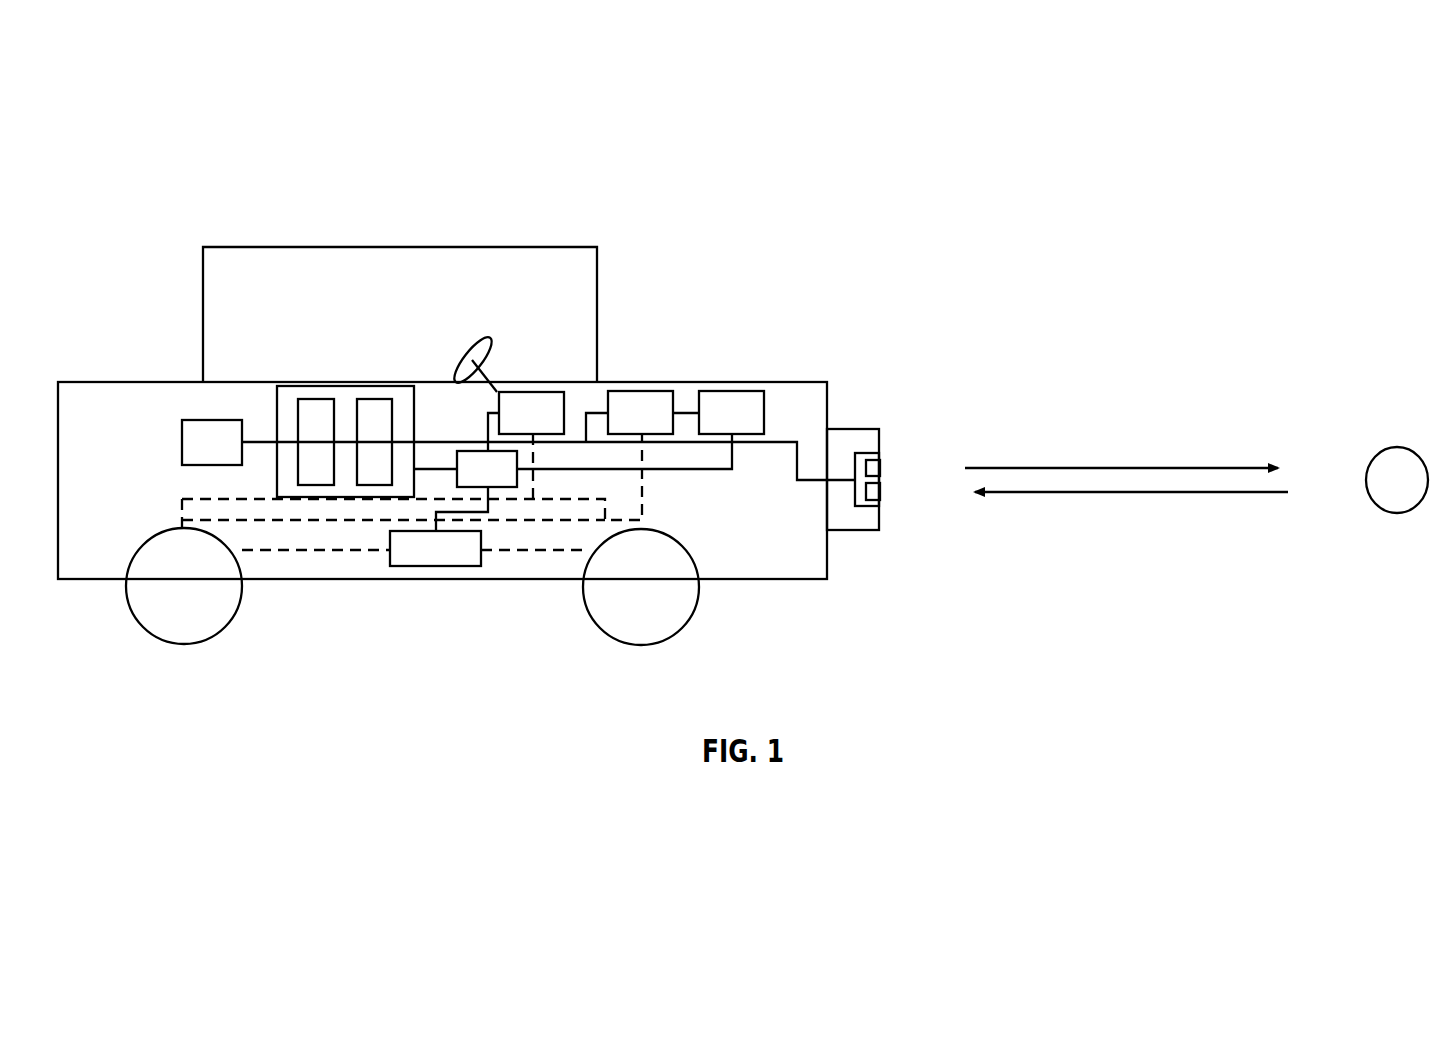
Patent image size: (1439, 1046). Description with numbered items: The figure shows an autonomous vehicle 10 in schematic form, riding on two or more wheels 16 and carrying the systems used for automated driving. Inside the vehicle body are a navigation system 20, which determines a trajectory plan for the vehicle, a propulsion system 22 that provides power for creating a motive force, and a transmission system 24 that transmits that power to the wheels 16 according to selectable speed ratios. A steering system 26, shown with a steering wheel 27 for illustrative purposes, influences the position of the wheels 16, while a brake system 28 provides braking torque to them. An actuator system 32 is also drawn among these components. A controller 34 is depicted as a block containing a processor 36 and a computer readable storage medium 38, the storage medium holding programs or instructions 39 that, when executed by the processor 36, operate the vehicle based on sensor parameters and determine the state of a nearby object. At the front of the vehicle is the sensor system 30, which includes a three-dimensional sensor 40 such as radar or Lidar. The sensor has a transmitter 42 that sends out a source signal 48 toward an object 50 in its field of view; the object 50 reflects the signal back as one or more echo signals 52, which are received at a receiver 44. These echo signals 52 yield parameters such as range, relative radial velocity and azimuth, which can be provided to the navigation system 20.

The autonomous vehicle 10 is at (524, 192).
The wheels 16 is at (183, 645).
The navigation system 20 is at (203, 420).
The propulsion system 22 is at (730, 391).
The transmission system 24 is at (640, 391).
The steering system 26 is at (532, 392).
The steering wheel 27 is at (487, 338).
The brake system 28 is at (436, 566).
The sensor system 30 is at (854, 382).
The actuator system 32 is at (472, 482).
The controller 34 is at (347, 383).
The processor 36 is at (317, 399).
The computer readable storage medium 38 is at (373, 399).
The programs or instructions 39 is at (374, 487).
The three-dimensional sensor 40 is at (905, 533).
The transmitter 42 is at (880, 468).
The receiver 44 is at (880, 492).
The source signal 48 is at (1127, 468).
The object 50 is at (1397, 447).
The echo signals 52 is at (1127, 492).